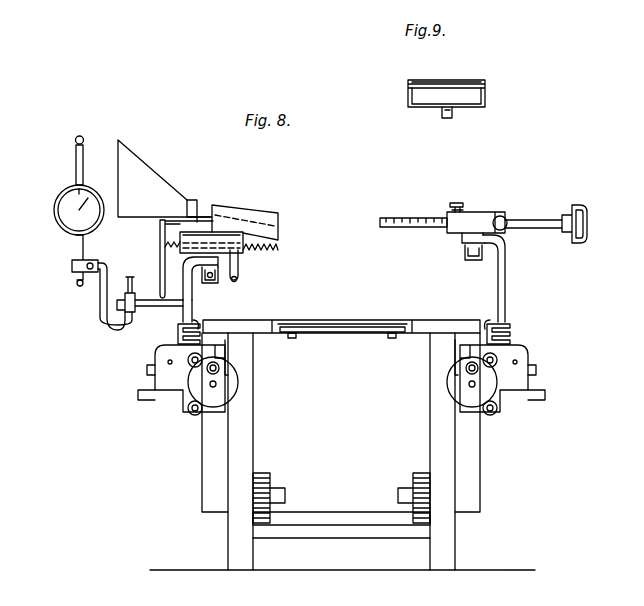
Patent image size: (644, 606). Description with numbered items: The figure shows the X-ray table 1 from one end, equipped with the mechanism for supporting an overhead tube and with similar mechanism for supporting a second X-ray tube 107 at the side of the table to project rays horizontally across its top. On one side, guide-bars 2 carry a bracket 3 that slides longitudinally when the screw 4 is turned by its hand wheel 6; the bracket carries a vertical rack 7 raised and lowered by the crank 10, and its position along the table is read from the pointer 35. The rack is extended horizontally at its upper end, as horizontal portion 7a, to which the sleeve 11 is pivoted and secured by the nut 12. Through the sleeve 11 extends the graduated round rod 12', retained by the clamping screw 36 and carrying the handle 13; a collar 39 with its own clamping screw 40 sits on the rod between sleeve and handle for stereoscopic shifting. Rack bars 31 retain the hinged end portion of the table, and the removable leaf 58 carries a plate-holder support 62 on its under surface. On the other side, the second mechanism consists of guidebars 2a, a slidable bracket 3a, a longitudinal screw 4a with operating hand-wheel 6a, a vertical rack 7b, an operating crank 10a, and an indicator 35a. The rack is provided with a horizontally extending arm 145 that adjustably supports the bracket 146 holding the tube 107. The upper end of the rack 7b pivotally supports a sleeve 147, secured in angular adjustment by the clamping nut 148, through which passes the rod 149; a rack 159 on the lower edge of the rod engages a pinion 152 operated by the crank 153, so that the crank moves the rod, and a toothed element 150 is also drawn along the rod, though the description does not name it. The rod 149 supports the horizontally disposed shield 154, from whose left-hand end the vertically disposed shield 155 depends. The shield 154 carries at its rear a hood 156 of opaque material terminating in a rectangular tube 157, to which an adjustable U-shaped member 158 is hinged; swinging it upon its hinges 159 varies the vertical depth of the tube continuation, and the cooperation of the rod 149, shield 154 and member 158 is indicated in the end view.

In FIG. 8, the table 1 is at (418, 333).
In FIG. 8, the guide-bars 2 is at (494, 360).
In FIG. 8, the guidebars 2a is at (190, 359).
In FIG. 8, the bracket 3 is at (530, 360).
In FIG. 8, the slidable bracket 3a is at (170, 380).
In FIG. 8, the screw 4 is at (468, 384).
In FIG. 8, the longitudinal screw 4a is at (218, 384).
In FIG. 8, the hand wheel 6 is at (460, 368).
In FIG. 8, the operating hand-wheel 6a is at (222, 368).
In FIG. 8, the rack 7 is at (506, 275).
In FIG. 8, the horizontal portion of rack 7a is at (463, 243).
In FIG. 8, the vertical rack 7b is at (192, 305).
In FIG. 8, the crank 10 is at (546, 395).
In FIG. 8, the operating crank 10a is at (138, 395).
In FIG. 8, the sleeve 11 is at (478, 219).
In FIG. 8, the nut 12 is at (467, 268).
In FIG. 8, the round rod 12' is at (413, 210).
In FIG. 8, the handle 13 is at (588, 222).
In FIG. 8, the rack bars 31 is at (273, 490).
In FIG. 8, the pointer 35 is at (510, 328).
In FIG. 8, the indicator 35a is at (188, 326).
In FIG. 8, the clamping screw 36 is at (459, 196).
In FIG. 8, the collar 39 is at (507, 230).
In FIG. 8, the clamping screw 40 is at (504, 219).
In FIG. 8, the removable leaf 58 is at (345, 327).
In FIG. 8, the plate-holder support 62 is at (295, 335).
In FIG. 8, the second X-ray tube 107 is at (75, 240).
In FIG. 8, the horizontally extending arm 145 is at (143, 296).
In FIG. 8, the bracket 146 is at (100, 304).
In FIG. 8, the sleeve 147 is at (202, 240).
In FIG. 8, the clamping nut 148 is at (216, 283).
In FIG. 8, the rod 149 is at (282, 242).
In FIG. 9, the rod 149 is at (454, 111).
In FIG. 8, the serrated rail 150 is at (283, 252).
In FIG. 9, the serrated rail 150 is at (447, 118).
In FIG. 8, the pinion 152 is at (244, 258).
In FIG. 8, the crank 153 is at (239, 277).
In FIG. 8, the horizontally disposed shield 154 is at (196, 213).
In FIG. 9, the horizontally disposed shield 154 is at (444, 89).
In FIG. 8, the vertically disposed shield 155 is at (160, 227).
In FIG. 8, the hood 156 is at (134, 154).
In FIG. 8, the rectangular tube 157 is at (192, 201).
In FIG. 8, the adjustable U-shaped member 158 is at (276, 213).
In FIG. 9, the adjustable U-shaped member 158 is at (425, 80).
In FIG. 8, the rack / hinges 159 is at (201, 220).